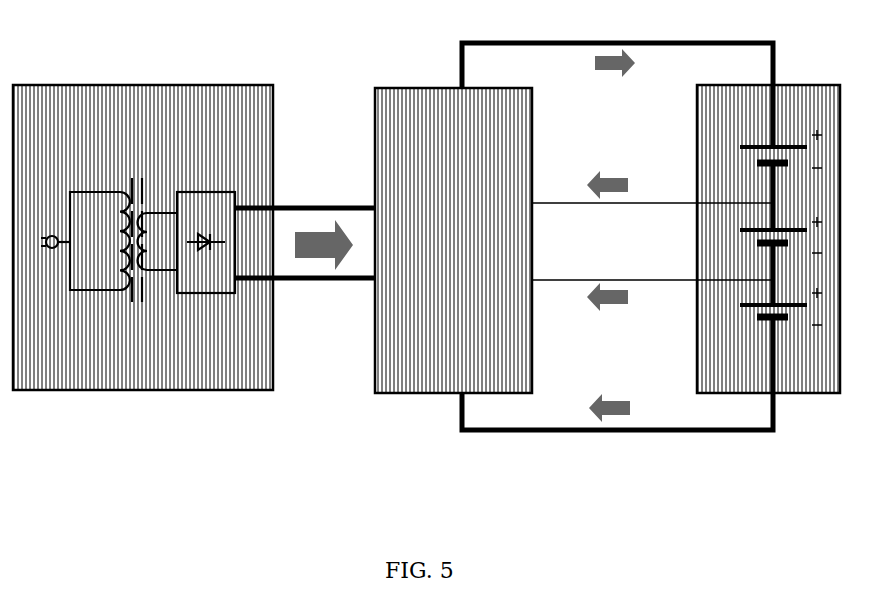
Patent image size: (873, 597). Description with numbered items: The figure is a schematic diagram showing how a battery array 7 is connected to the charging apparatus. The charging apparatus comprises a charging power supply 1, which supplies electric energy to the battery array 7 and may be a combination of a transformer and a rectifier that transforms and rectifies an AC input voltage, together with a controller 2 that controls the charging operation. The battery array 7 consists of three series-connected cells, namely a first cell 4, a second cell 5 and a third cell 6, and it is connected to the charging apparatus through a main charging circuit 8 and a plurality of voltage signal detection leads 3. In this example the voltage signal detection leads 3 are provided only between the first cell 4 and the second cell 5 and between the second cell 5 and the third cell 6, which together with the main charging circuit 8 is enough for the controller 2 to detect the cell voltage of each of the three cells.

The charging power supply 1 is at (194, 237).
The controller 2 is at (453, 240).
The voltage signal detection leads 3 is at (652, 241).
The first cell 4 is at (767, 155).
The second cell 5 is at (767, 240).
The third cell 6 is at (767, 313).
The battery array 7 is at (768, 239).
The main charging circuit 8 is at (617, 221).